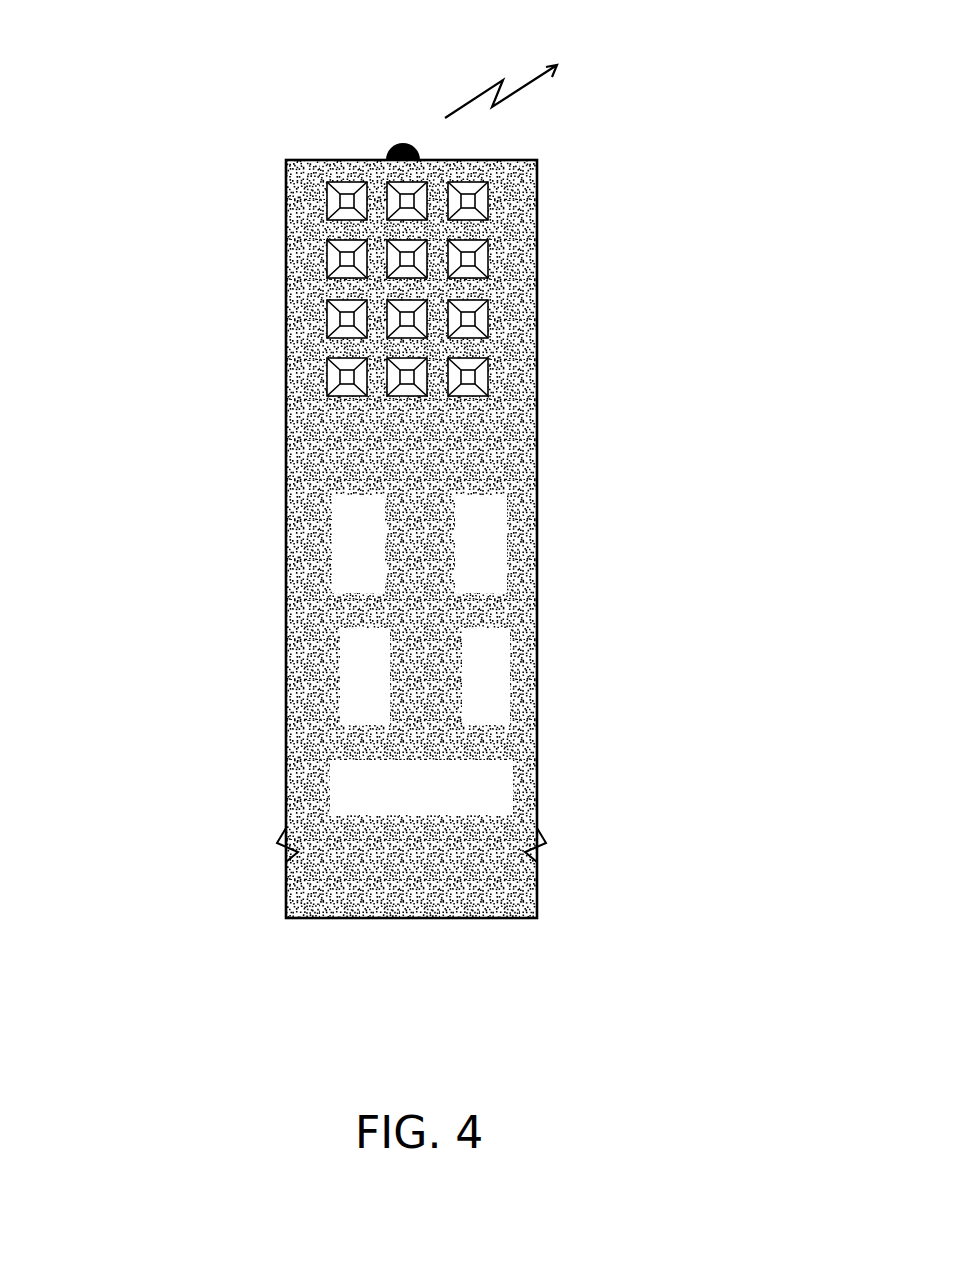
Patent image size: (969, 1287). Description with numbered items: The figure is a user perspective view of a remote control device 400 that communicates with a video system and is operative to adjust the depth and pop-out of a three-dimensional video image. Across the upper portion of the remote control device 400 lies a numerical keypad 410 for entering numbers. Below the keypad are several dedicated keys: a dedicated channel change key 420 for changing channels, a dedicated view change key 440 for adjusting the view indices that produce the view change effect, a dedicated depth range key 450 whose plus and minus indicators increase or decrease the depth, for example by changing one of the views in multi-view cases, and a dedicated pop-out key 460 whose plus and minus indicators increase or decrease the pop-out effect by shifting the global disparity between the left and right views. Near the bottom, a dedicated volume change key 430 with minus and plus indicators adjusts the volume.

The remote control device 400 is at (425, 46).
The numerical keypad 410 is at (307, 180).
The dedicated channel change key 420 is at (330, 522).
The dedicated volume change key 430 is at (420, 818).
The dedicated view change key 440 is at (505, 518).
The dedicated depth range key 450 is at (335, 660).
The dedicated pop-out key 460 is at (510, 650).